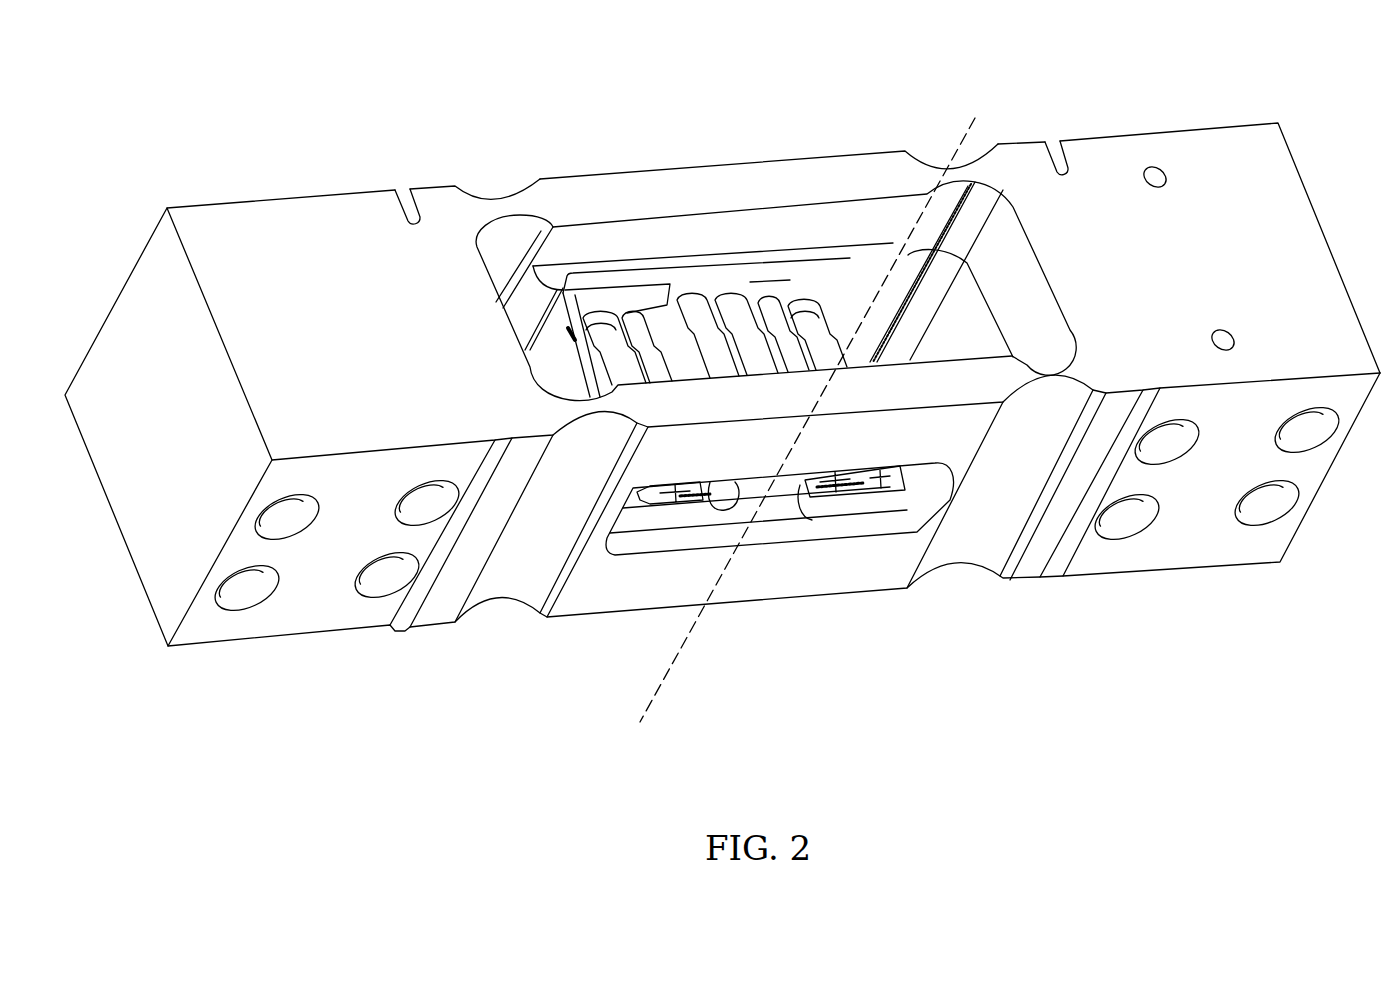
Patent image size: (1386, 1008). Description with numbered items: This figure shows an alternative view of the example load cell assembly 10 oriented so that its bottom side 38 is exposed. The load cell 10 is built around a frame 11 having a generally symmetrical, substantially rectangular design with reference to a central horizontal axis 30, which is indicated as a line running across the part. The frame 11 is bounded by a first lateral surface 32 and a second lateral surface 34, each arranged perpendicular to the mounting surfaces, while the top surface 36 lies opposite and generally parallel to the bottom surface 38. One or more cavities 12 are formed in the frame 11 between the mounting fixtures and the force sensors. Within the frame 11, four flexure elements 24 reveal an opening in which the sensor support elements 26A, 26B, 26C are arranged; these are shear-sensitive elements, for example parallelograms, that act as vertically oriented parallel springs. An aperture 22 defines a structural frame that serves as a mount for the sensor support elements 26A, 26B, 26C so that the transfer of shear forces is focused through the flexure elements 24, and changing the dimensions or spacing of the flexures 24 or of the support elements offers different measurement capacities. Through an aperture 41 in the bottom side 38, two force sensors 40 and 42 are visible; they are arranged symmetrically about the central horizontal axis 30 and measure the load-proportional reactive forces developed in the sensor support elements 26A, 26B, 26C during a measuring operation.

The load cell assembly 10 is at (160, 97).
The frame 11 is at (722, 158).
The cavities 12 is at (402, 183).
The aperture 22 is at (981, 332).
The flexure elements 24 is at (1032, 404).
The sensor support element 26A is at (604, 297).
The sensor support element 26B is at (709, 284).
The sensor support element 26C is at (796, 284).
The horizontal axis 30 is at (668, 656).
The first lateral surface 32 is at (384, 341).
The second lateral surface 34 is at (1063, 588).
The top surface 36 is at (112, 266).
The bottom surface 38 is at (774, 539).
The force sensor 40 is at (684, 507).
The aperture 41 is at (780, 528).
The force sensor 42 is at (834, 502).